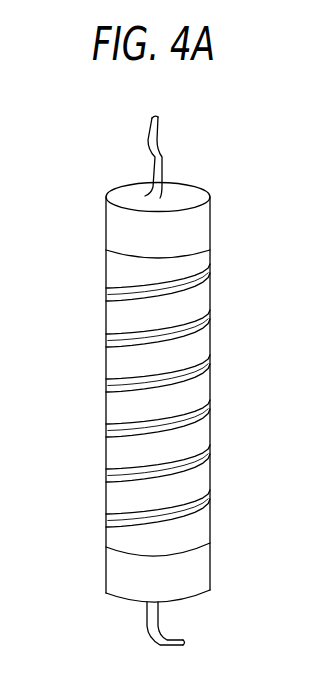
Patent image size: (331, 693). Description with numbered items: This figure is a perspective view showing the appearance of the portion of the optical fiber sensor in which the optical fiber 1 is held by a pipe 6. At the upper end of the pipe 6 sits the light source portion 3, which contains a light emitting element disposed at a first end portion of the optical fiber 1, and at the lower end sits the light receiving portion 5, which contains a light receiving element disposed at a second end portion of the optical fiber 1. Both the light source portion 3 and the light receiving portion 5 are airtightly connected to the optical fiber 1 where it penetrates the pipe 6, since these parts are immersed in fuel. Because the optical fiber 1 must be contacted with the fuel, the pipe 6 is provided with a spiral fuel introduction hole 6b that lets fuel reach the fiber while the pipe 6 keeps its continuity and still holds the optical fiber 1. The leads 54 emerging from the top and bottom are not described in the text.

The optical fiber 1 is at (190, 395).
The light source portion 3 is at (118, 221).
The light receiving portion 5 is at (117, 570).
The pipe 6 is at (118, 418).
The fuel introduction hole 6b is at (199, 298).
The lead wire 54 is at (105, 380).